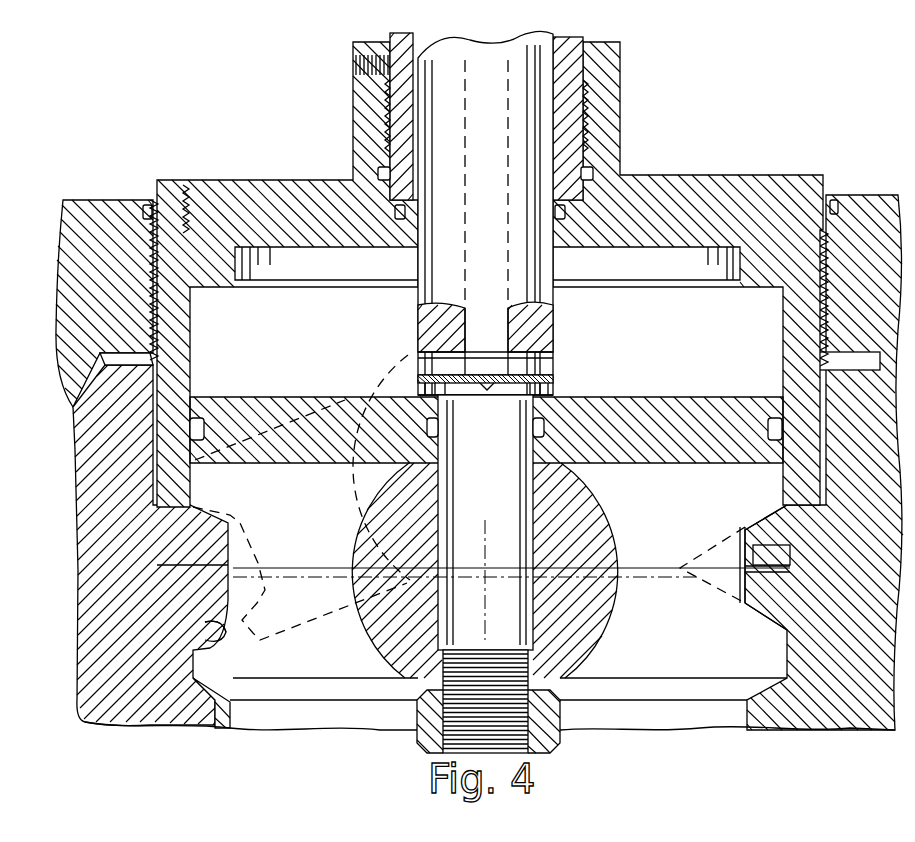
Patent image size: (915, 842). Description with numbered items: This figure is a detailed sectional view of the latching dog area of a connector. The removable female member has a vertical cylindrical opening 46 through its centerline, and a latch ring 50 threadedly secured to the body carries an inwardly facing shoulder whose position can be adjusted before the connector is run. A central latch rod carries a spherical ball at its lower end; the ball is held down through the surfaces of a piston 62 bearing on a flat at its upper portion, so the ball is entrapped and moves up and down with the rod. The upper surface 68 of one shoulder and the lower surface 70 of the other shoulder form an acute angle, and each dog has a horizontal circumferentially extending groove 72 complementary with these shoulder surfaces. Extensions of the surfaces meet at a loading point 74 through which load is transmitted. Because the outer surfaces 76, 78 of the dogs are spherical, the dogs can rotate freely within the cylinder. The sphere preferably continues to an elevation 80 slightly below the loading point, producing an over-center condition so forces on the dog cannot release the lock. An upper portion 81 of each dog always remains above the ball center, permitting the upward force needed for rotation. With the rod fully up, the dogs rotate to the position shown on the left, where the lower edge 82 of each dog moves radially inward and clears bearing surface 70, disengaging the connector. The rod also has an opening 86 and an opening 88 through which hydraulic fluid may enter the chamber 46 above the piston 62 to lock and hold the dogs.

The vertical cylindrical opening 46 is at (672, 313).
The latch ring 50 is at (172, 192).
The piston 62 is at (727, 412).
The upper surface of shoulder 68 is at (757, 535).
The lower surface of shoulder 70 is at (767, 620).
The circumferentially extending groove 72 is at (200, 563).
The loading point 74 is at (655, 568).
The outer surface of dog 76 is at (200, 487).
The outer surface of dog 78 is at (255, 632).
The elevation 80 is at (645, 577).
The upper portion of dog 81 is at (590, 475).
The lower edge of dog 82 is at (245, 622).
The opening 86 is at (537, 110).
The opening 88 is at (537, 358).